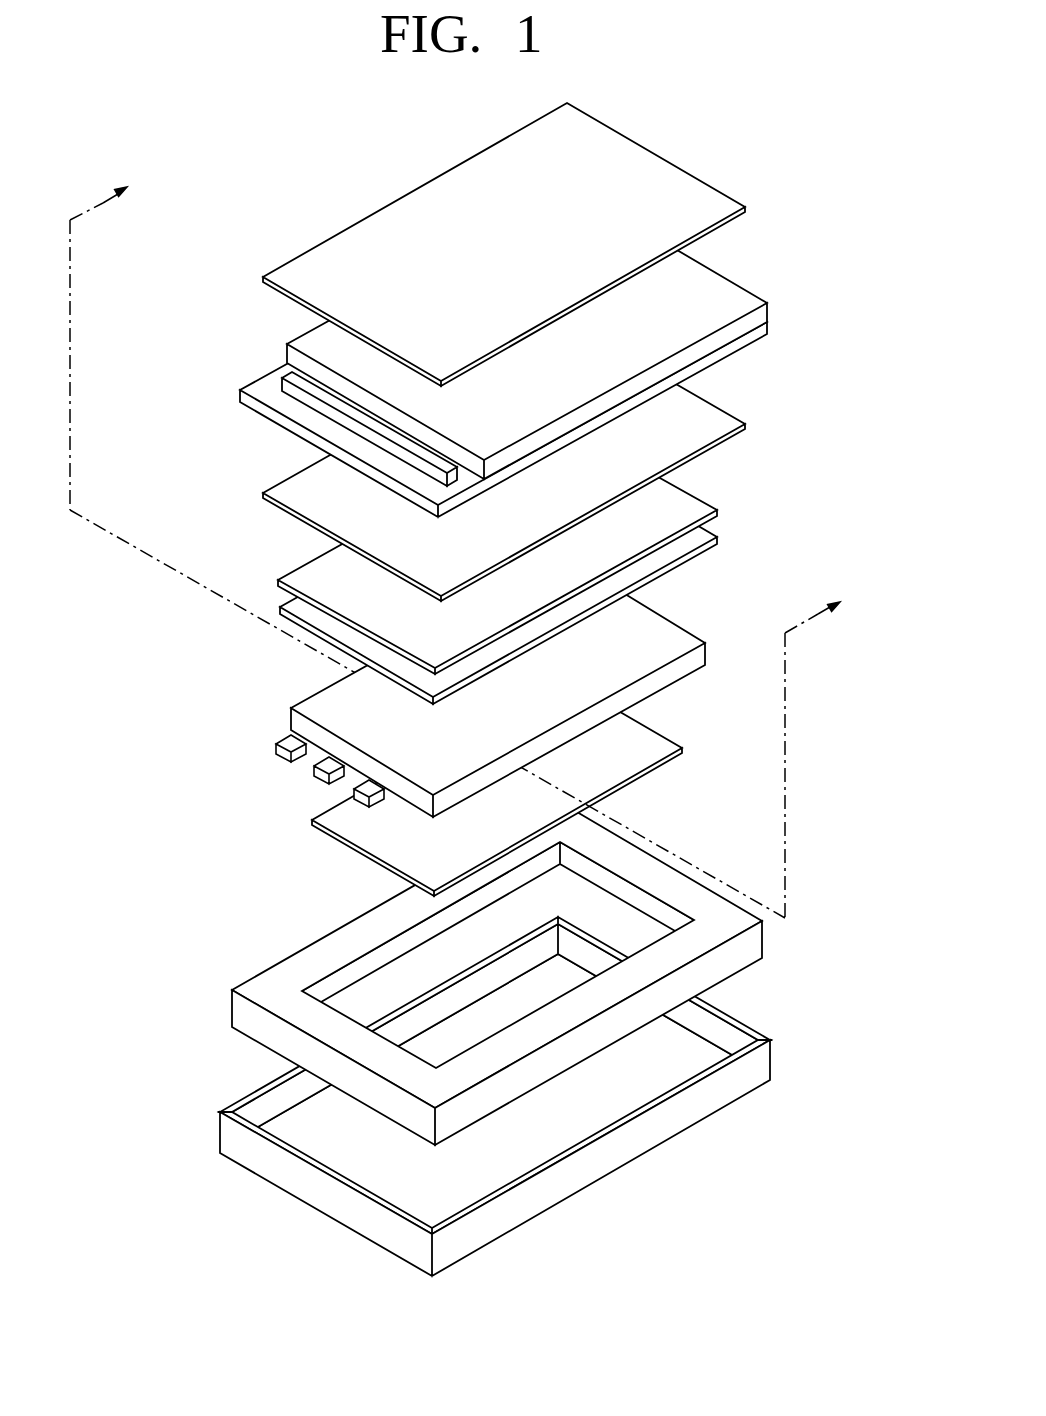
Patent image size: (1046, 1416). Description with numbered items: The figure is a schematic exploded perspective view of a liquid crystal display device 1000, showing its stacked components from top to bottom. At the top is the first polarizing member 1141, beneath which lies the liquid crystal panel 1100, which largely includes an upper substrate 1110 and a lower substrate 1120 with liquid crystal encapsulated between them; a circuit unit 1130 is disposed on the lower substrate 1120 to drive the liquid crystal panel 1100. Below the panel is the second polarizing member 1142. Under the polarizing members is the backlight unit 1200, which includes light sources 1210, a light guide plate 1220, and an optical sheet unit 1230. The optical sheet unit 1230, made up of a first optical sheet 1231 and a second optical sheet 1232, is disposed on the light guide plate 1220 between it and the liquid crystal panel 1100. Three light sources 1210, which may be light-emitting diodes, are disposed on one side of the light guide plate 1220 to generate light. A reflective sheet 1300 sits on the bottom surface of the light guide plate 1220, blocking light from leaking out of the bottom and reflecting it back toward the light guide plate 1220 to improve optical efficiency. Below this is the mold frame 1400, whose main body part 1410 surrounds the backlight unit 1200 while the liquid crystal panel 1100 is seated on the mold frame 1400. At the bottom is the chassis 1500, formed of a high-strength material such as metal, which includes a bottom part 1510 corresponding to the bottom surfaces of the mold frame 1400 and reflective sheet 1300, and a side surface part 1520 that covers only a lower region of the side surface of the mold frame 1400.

The liquid crystal display device 1000 is at (457, 681).
The liquid crystal panel 1100 is at (426, 352).
The upper substrate 1110 is at (303, 346).
The lower substrate 1120 is at (253, 397).
The circuit unit 1130 is at (293, 371).
The first polarizing member 1141 is at (283, 270).
The second polarizing member 1142 is at (282, 495).
The backlight unit 1200 is at (384, 619).
The light sources 1210 is at (285, 744).
The light guide plate 1220 is at (313, 709).
The optical sheet unit 1230 is at (418, 563).
The first optical sheet 1231 is at (293, 607).
The second optical sheet 1232 is at (287, 581).
The reflective sheet 1300 is at (332, 833).
The mold frame 1400 is at (428, 973).
The main body part 1410 is at (277, 977).
The chassis 1500 is at (420, 1096).
The bottom part 1510 is at (300, 1128).
The side surface part 1520 is at (250, 1155).